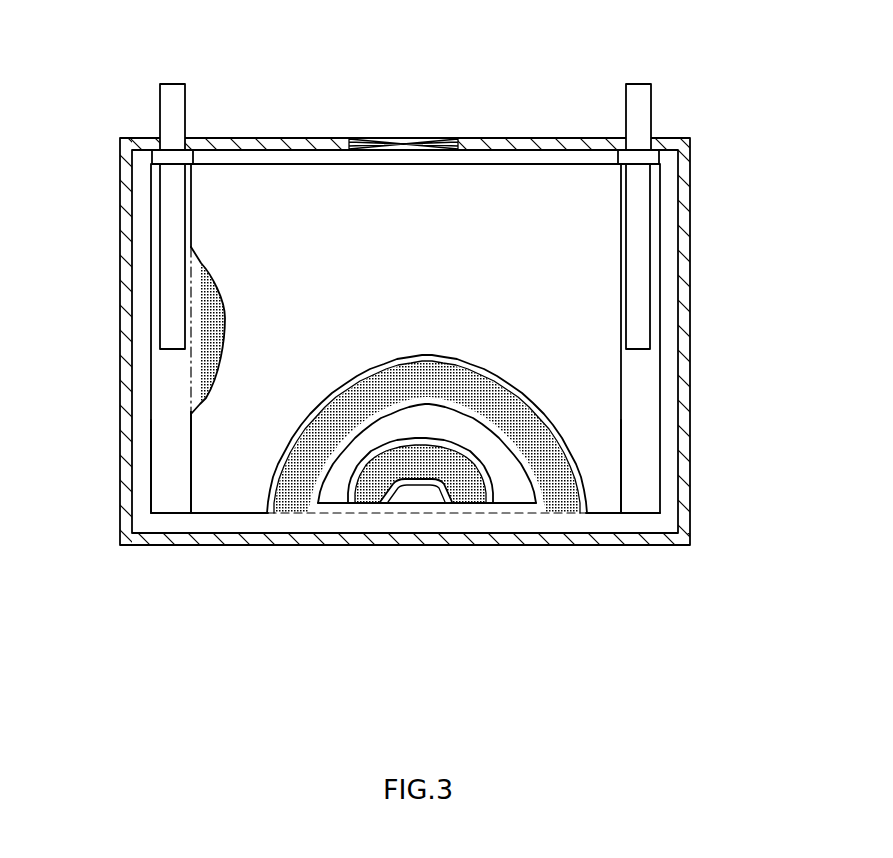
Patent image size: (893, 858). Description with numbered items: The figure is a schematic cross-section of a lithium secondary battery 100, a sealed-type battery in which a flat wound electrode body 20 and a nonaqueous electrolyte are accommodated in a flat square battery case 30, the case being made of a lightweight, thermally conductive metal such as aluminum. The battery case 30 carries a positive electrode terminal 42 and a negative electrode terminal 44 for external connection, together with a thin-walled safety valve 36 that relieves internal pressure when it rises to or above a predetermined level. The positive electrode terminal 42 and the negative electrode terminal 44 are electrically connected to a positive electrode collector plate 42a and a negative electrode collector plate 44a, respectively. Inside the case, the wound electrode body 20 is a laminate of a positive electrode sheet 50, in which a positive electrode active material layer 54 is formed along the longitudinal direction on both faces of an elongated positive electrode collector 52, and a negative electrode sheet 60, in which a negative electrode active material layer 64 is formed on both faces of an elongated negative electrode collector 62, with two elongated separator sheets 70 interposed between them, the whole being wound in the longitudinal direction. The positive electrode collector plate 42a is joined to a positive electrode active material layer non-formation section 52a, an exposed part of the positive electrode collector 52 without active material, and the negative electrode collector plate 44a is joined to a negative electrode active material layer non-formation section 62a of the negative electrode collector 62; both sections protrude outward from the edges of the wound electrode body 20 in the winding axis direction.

The lithium secondary battery 100 is at (453, 277).
The wound electrode body 20 is at (410, 368).
The battery case 30 is at (702, 257).
The safety valve 36 is at (405, 145).
The positive electrode terminal 42 is at (173, 90).
The positive electrode collector plate 42a is at (173, 235).
The negative electrode terminal 44 is at (640, 90).
The negative electrode collector plate 44a is at (638, 200).
The positive electrode sheet 50 is at (290, 497).
The positive electrode collector 52 is at (148, 407).
The positive electrode active material layer non-formation section 52a is at (167, 485).
The positive electrode active material layer 54 is at (213, 302).
The negative electrode sheet 60 is at (368, 493).
The negative electrode collector 62 is at (660, 363).
The negative electrode active material layer non-formation section 62a is at (645, 408).
The negative electrode active material layer 64 is at (415, 554).
The separator sheet 70 is at (228, 442).